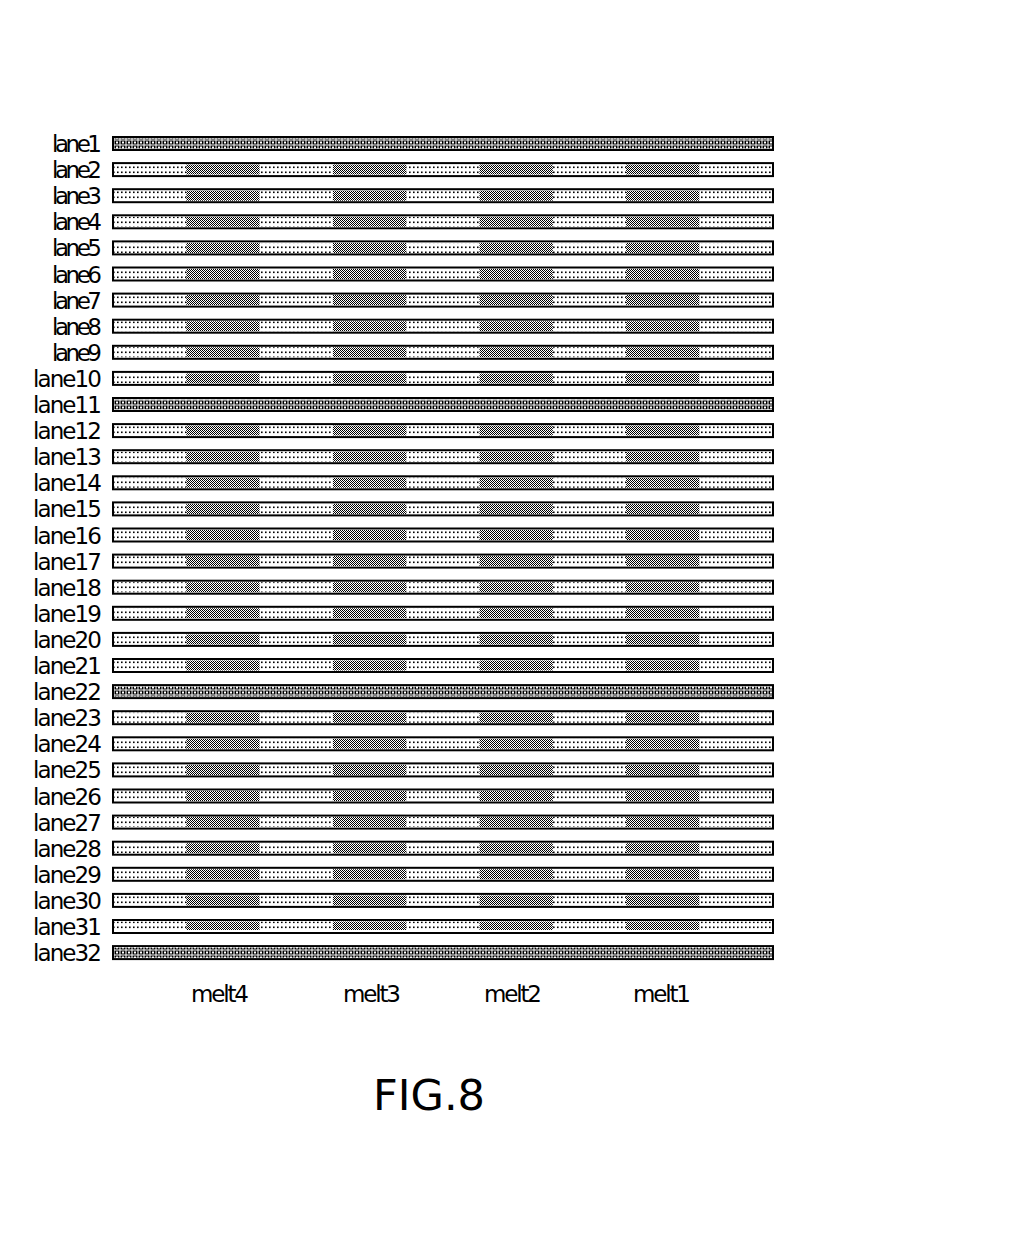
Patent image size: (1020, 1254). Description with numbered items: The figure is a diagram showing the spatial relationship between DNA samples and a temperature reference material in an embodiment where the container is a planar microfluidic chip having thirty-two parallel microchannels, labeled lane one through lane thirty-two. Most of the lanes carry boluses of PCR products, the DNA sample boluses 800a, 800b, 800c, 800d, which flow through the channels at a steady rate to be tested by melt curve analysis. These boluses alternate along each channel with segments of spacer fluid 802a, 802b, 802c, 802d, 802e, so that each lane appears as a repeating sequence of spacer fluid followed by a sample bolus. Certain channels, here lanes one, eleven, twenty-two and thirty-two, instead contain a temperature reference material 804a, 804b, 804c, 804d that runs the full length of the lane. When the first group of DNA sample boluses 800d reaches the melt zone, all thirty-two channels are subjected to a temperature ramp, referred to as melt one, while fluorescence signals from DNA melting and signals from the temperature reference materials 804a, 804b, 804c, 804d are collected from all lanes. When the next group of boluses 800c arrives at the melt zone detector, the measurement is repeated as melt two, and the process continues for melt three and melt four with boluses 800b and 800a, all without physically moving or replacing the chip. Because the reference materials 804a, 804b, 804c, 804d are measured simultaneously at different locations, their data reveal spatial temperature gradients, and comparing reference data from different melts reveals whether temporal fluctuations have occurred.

The spacer fluid 802a is at (137, 162).
The DNA sample bolus 800a is at (220, 162).
The spacer fluid 802b is at (292, 162).
The DNA sample bolus 800b is at (373, 162).
The spacer fluid 802c is at (437, 162).
The DNA sample bolus 800c is at (515, 162).
The spacer fluid 802d is at (585, 162).
The DNA sample bolus 800d is at (663, 162).
The spacer fluid 802e is at (733, 162).
The temperature reference material 804a is at (773, 150).
The temperature reference material 804b is at (773, 411).
The temperature reference material 804c is at (773, 698).
The temperature reference material 804d is at (773, 959).